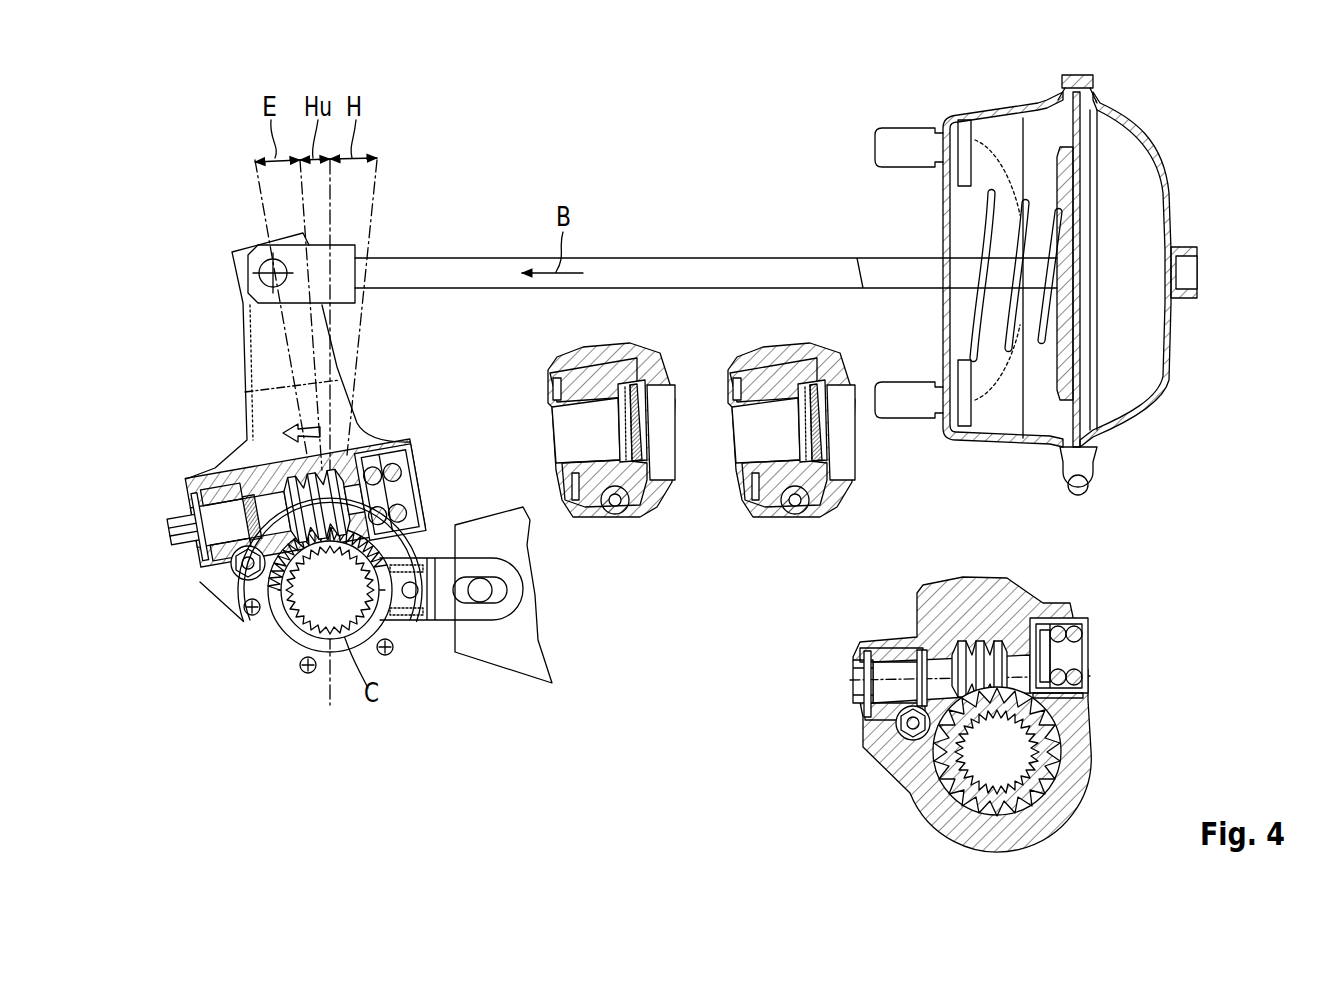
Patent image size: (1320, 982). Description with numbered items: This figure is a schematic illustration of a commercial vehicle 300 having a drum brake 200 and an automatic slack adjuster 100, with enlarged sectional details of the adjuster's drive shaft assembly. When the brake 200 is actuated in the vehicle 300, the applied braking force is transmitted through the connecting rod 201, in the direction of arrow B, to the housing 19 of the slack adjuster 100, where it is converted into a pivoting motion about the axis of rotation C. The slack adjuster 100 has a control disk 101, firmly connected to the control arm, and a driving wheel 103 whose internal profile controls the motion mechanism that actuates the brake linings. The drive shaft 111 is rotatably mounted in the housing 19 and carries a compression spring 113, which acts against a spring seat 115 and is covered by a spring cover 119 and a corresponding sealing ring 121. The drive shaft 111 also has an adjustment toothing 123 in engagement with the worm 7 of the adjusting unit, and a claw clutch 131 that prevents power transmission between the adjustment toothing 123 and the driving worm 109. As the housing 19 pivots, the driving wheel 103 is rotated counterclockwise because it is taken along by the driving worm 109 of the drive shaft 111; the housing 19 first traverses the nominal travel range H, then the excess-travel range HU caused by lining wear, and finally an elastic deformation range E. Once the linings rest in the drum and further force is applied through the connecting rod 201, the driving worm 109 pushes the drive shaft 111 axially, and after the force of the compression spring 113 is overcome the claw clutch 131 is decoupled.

The vehicle 300 is at (186, 132).
The brake 200 is at (1181, 125).
The connecting rod 201 is at (722, 270).
The housing 19 is at (226, 347).
The slack adjuster 100 is at (243, 702).
The control disk 101 is at (286, 617).
The driving wheel 103 is at (300, 631).
The driving worm 109 is at (302, 470).
The drive shaft 111 is at (211, 505).
The compression spring 113 is at (414, 470).
The spring seat 115 is at (388, 498).
The spring cover 119 is at (1057, 663).
The sealing ring 121 is at (1062, 700).
The adjustment toothing 123 is at (236, 472).
The claw clutch 131 is at (250, 525).
The worm 7 is at (233, 578).